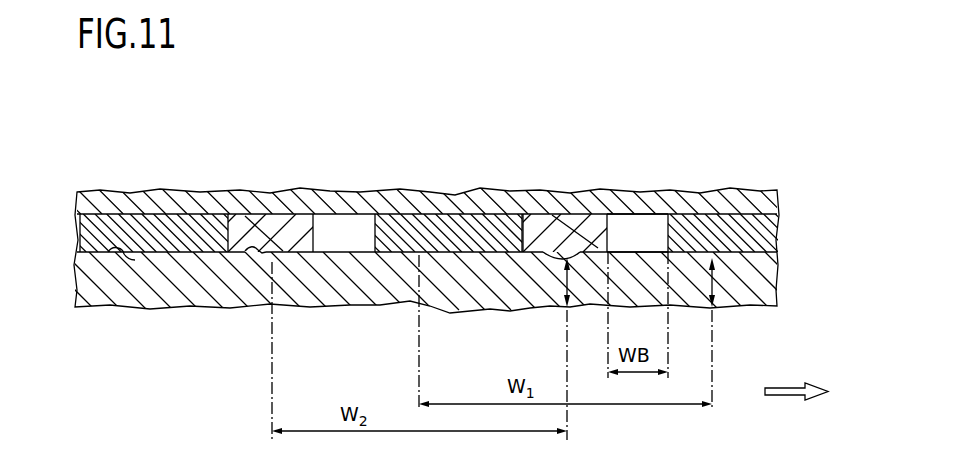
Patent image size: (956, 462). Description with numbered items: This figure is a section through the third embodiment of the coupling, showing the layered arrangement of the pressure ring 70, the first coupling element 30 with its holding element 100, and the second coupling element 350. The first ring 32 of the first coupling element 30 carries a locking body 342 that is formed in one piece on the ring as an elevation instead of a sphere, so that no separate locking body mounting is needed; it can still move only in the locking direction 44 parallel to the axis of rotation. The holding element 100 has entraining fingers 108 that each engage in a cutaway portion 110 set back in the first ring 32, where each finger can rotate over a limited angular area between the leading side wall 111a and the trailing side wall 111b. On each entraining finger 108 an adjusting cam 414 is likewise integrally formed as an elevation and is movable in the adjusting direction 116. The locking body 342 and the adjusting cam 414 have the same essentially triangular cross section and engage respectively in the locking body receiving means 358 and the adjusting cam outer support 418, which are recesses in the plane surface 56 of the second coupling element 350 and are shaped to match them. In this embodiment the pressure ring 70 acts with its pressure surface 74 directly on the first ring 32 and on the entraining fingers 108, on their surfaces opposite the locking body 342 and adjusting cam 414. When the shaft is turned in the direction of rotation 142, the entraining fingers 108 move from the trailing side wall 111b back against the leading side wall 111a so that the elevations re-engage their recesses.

The first coupling element 30 is at (219, 206).
The first ring 32 is at (176, 206).
The locking direction 44 is at (715, 292).
The plane surface 56 is at (752, 240).
The pressure ring 70 is at (705, 200).
The pressure surface 74 is at (400, 218).
The holding element 100 is at (274, 206).
The entraining finger 108 is at (303, 214).
The cutaway portion 110 is at (617, 216).
The leading side wall 111a is at (523, 216).
The trailing side wall 111b is at (659, 214).
The adjusting direction 116 is at (566, 289).
The direction of rotation 142 is at (790, 398).
The locking body 342 is at (135, 262).
The second coupling element 350 is at (72, 292).
The locking body receiving means 358 is at (113, 256).
The adjusting cam 414 is at (283, 253).
The adjusting cam outer support 418 is at (248, 255).